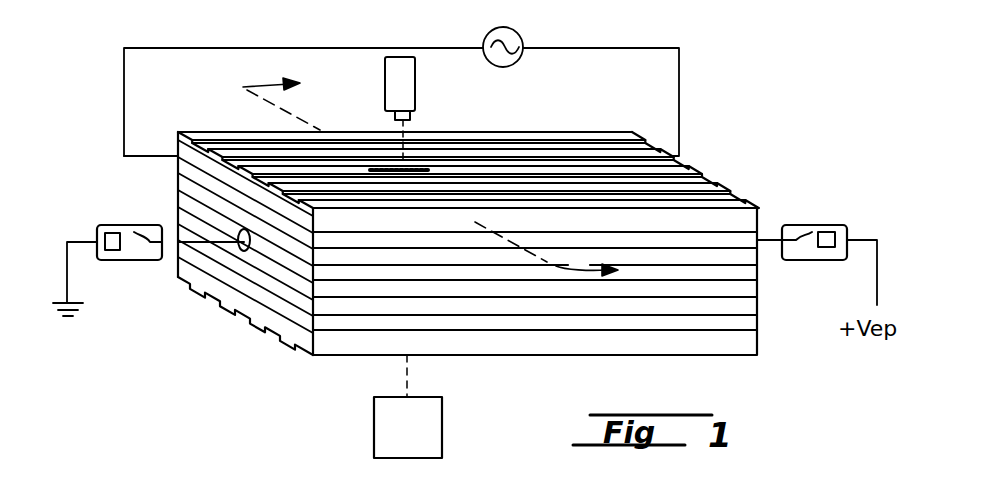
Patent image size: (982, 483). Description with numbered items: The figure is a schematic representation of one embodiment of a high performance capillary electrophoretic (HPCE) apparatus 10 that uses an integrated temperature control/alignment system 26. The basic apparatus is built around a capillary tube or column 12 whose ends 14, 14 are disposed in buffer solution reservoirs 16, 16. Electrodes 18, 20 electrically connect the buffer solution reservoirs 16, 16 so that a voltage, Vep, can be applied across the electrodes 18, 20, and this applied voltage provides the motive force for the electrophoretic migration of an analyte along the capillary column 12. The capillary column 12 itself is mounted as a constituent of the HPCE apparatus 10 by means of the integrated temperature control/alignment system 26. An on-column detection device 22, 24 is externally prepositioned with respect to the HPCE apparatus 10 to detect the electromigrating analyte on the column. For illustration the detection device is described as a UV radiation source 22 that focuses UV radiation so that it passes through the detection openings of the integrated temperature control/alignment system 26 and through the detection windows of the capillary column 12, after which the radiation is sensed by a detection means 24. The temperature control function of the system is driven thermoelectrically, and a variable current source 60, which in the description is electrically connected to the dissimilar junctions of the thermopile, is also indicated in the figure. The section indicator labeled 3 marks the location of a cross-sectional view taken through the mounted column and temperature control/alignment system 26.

The high performance capillary electrophoretic apparatus 10 is at (240, 349).
The capillary tube or column 12 is at (172, 248).
The ends 14 is at (141, 227).
The buffer solution reservoirs 16 is at (127, 260).
The electrode 18 is at (103, 225).
The electrode 20 is at (840, 225).
The UV radiation source 22 is at (412, 90).
The detection means 24 is at (442, 405).
The integrated temperature control/alignment system 26 is at (502, 133).
The variable current source 60 is at (522, 60).
The section line 3- 3 is at (445, 178).